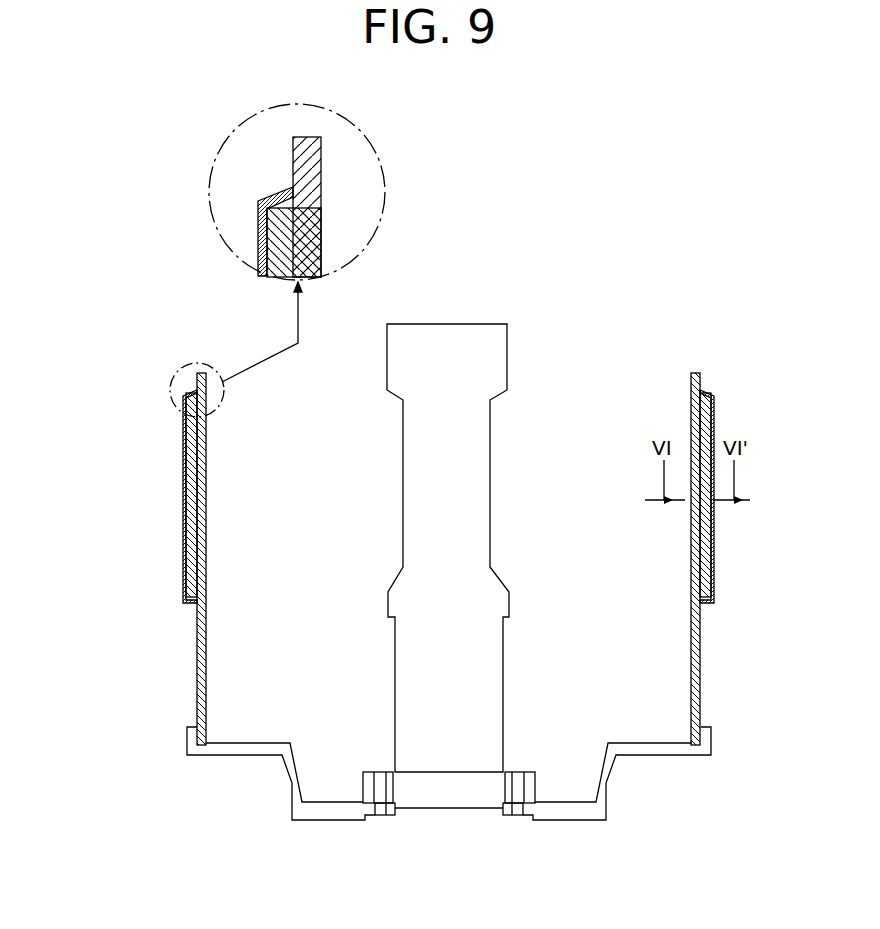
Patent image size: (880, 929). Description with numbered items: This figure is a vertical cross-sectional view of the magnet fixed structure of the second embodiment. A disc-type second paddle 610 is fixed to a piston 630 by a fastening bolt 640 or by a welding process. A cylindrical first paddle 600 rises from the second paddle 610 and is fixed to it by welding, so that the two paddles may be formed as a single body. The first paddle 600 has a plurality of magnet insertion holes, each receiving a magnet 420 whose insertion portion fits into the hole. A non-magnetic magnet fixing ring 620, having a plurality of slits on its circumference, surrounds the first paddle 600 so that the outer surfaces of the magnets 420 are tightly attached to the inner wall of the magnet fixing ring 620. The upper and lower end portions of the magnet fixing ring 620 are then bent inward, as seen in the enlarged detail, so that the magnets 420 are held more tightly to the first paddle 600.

The first paddle 600 is at (318, 172).
The magnet 420 is at (318, 236).
The magnet fixing ring 620 is at (262, 216).
The piston 630 is at (405, 483).
The fastening bolt 640 is at (380, 815).
The second paddle 610 is at (230, 752).